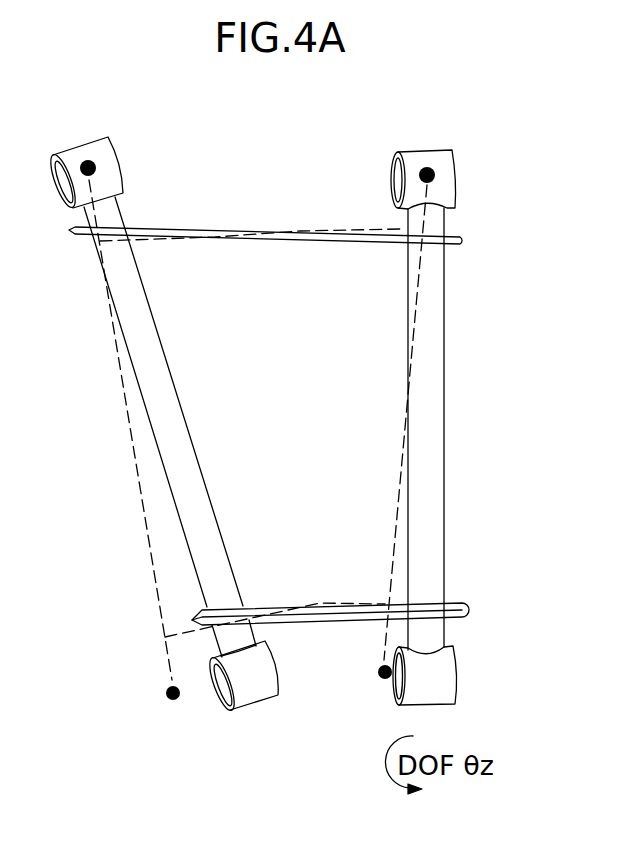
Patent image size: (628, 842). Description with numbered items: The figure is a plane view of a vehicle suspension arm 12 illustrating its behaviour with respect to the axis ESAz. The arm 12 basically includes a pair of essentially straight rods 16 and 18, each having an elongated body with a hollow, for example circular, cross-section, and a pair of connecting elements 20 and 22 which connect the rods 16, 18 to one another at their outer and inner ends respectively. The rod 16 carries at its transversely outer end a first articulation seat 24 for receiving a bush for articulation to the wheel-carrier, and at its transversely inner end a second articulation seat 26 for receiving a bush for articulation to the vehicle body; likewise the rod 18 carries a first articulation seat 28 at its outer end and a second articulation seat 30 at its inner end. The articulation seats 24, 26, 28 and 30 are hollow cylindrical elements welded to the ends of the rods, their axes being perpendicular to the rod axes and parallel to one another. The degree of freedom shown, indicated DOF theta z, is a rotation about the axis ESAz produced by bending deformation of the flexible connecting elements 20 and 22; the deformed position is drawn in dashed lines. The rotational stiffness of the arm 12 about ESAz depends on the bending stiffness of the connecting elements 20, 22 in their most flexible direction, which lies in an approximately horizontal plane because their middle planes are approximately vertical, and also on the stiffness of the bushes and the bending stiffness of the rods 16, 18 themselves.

The arm 12 is at (468, 387).
The rod 16 is at (177, 423).
The rod 18 is at (447, 492).
The connecting element 20 is at (322, 627).
The connecting element 22 is at (292, 227).
The first articulation seat 24 is at (215, 704).
The second articulation seat 26 is at (121, 165).
The first articulation seat 28 is at (457, 683).
The second articulation seat 30 is at (457, 176).